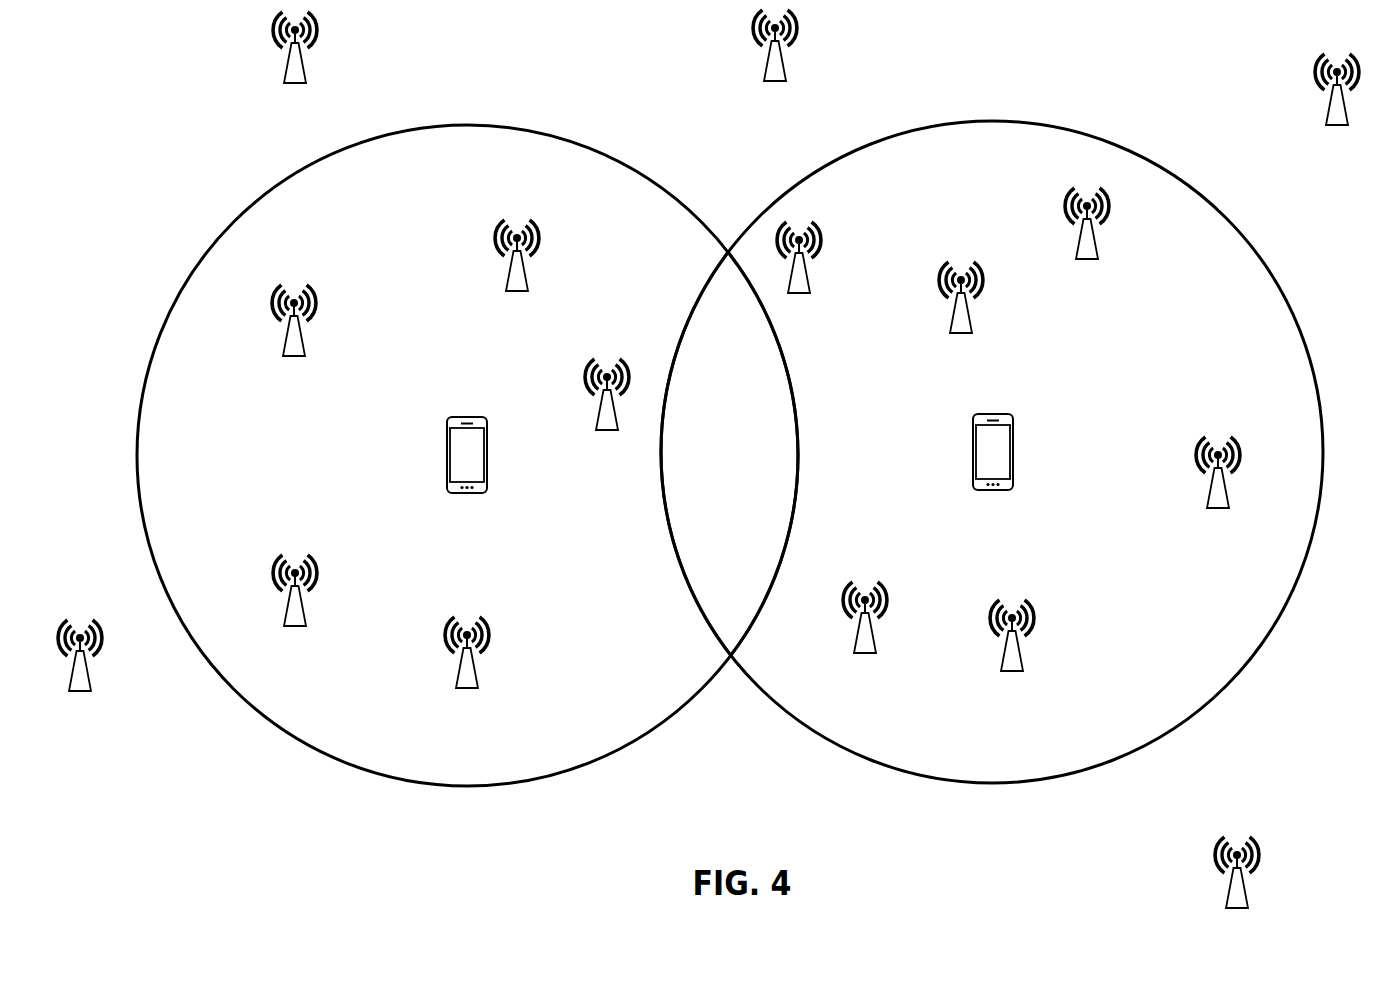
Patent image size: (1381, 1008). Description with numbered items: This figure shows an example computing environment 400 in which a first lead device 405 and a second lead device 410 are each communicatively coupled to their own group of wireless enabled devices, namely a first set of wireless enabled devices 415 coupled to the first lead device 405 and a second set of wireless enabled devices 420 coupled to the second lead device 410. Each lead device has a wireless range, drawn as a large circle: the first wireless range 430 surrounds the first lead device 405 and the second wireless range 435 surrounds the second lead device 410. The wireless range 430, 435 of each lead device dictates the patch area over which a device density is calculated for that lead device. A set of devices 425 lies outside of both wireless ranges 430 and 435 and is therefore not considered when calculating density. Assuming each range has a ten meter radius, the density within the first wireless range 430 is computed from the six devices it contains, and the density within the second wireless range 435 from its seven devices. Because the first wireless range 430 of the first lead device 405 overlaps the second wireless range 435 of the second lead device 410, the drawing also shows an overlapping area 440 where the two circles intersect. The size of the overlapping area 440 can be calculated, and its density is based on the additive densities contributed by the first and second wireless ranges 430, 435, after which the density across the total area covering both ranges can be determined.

The computing environment 400 is at (1170, 103).
The first lead device 405 is at (485, 446).
The second lead device 410 is at (1013, 432).
The first set of wireless enabled devices 415 is at (512, 282).
The second set of wireless enabled devices 420 is at (952, 317).
The set of devices outside the wireless ranges 425 is at (767, 72).
The first wireless range 430 is at (467, 125).
The second wireless range 435 is at (1031, 121).
The overlapping area 440 is at (780, 478).